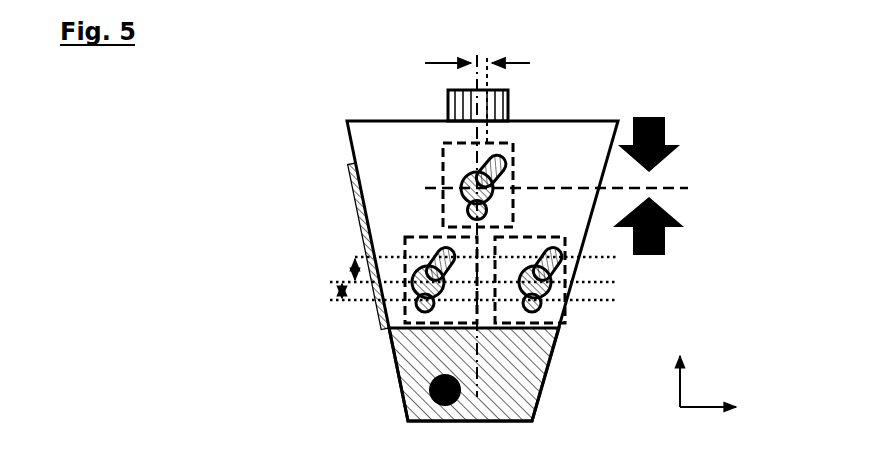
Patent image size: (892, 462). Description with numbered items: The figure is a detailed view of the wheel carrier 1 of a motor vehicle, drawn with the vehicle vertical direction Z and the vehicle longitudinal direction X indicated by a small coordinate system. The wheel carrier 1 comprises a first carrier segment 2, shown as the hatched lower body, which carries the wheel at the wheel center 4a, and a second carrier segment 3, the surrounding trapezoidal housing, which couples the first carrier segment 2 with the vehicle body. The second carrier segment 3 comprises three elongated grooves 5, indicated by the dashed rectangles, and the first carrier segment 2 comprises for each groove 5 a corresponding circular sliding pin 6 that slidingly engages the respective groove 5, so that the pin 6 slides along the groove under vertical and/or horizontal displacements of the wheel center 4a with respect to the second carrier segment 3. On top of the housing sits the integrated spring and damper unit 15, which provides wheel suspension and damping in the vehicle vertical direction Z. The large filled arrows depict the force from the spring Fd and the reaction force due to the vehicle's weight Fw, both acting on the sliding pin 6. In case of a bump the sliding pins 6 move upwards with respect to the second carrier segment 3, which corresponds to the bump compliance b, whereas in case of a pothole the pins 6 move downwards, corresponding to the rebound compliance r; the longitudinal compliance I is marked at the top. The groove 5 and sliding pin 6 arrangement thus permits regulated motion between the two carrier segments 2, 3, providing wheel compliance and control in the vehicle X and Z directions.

The wheel carrier 1 is at (399, 249).
The first carrier segment 2 is at (535, 388).
The second carrier segment 3 is at (373, 124).
The wheel center 4a is at (429, 390).
The groove 5 is at (417, 255).
The sliding pin 6 is at (556, 291).
The spring and damper unit 15 is at (509, 108).
The longitudinal compliance I is at (486, 52).
The bump compliance b is at (334, 271).
The rebound compliance r is at (324, 300).
The force from spring Fd is at (664, 132).
The reaction force from vehicle weight Fw is at (665, 250).
The vehicle vertical direction Z is at (666, 374).
The vehicle longitudinal direction X is at (718, 423).